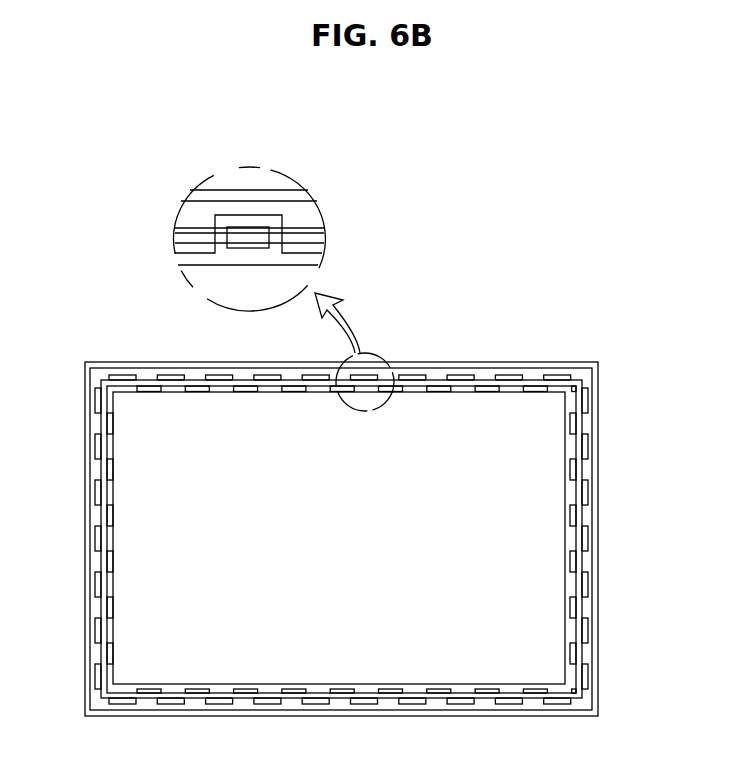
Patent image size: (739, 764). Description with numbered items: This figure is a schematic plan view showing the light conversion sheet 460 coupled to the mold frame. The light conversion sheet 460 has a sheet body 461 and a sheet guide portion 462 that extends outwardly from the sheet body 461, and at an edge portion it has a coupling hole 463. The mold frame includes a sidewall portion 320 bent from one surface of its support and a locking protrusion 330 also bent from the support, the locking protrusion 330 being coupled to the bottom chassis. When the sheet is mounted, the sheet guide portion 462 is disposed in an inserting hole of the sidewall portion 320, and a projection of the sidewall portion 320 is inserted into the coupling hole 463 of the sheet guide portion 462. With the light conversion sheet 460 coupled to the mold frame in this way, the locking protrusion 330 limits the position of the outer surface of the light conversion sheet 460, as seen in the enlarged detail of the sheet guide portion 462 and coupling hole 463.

The sidewall portion 320 is at (573, 562).
The locking protrusion 330 is at (593, 515).
The light conversion sheet 460 is at (250, 210).
The sheet body 461 is at (436, 408).
The sheet guide portion 462 is at (237, 218).
The coupling hole 463 is at (257, 223).